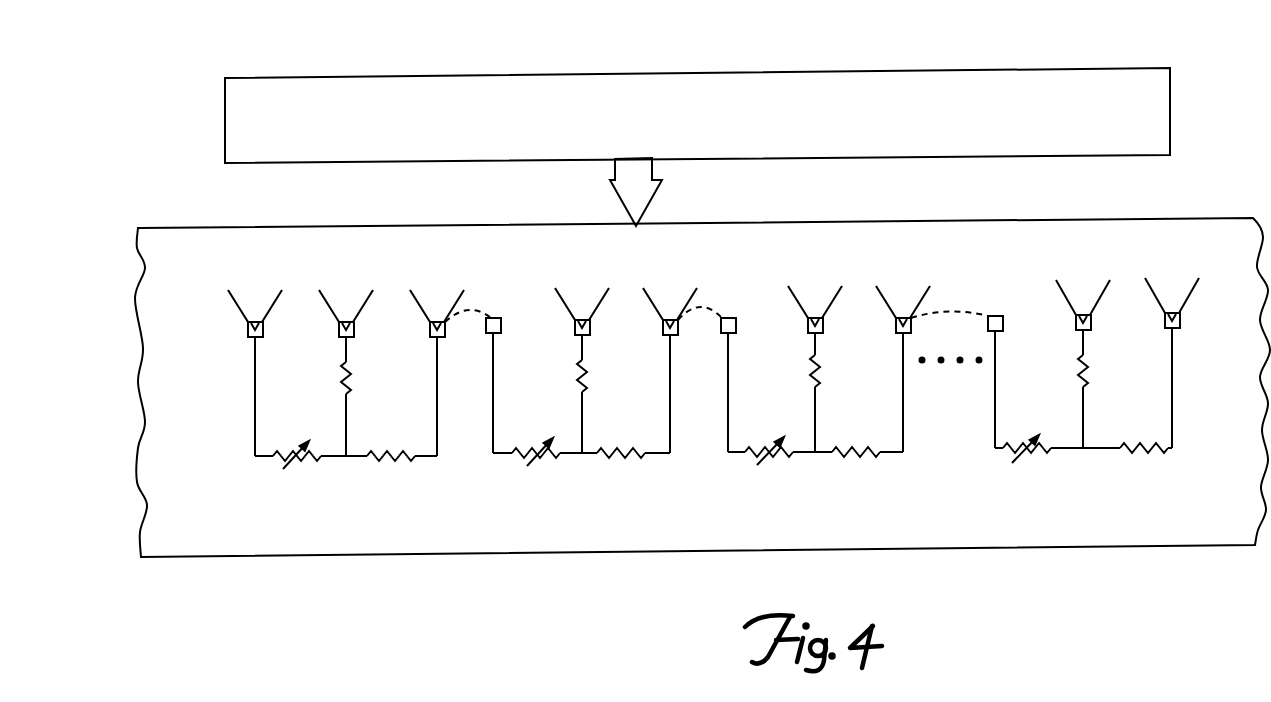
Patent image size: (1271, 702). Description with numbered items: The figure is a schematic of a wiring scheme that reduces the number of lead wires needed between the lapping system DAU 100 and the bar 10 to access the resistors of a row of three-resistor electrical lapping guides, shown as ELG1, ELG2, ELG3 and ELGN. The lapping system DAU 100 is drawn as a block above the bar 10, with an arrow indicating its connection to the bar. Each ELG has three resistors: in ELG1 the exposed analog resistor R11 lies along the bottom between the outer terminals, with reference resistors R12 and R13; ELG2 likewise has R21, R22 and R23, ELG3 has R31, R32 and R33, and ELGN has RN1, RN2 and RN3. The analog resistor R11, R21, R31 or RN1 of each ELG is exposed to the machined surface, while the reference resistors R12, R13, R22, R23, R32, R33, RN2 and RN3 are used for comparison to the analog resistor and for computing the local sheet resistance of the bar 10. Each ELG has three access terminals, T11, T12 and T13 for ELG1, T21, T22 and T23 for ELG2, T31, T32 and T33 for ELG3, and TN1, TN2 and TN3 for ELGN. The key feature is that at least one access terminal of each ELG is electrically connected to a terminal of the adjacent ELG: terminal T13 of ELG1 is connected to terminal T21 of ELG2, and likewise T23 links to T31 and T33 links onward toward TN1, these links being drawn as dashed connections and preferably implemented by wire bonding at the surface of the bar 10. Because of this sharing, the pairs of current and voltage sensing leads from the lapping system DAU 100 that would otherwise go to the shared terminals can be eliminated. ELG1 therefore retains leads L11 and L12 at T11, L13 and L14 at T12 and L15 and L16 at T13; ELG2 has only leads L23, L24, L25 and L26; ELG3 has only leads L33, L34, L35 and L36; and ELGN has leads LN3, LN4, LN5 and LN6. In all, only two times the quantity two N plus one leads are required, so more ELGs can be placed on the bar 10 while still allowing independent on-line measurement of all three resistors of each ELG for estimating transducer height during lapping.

The lapping system DAU 100 is at (223, 78).
The bar 10 is at (190, 557).
The first electrical lapping guide ELG1 is at (346, 395).
The second electrical lapping guide ELG2 is at (605, 392).
The third electrical lapping guide ELG3 is at (854, 389).
The Nth electrical lapping guide ELGN is at (1105, 387).
The first access terminal of ELG1 T11 is at (232, 389).
The second access terminal of ELG1 T12 is at (323, 389).
The third access terminal of ELG1 T13 is at (411, 389).
The first access terminal of ELG2 T21 is at (516, 385).
The second access terminal of ELG2 T22 is at (604, 386).
The third access terminal of ELG2 T23 is at (694, 386).
The first access terminal of ELG3 T31 is at (750, 385).
The second access terminal of ELG3 T32 is at (836, 385).
The third access terminal of ELG3 T33 is at (883, 385).
The first access terminal of ELGN TN1 is at (1017, 382).
The second access terminal of ELGN TN2 is at (1105, 381).
The third access terminal of ELGN TN3 is at (1194, 380).
The analog resistor of ELG1 R11 is at (297, 469).
The first reference resistor of ELG1 R12 is at (367, 386).
The second reference resistor of ELG1 R13 is at (391, 474).
The analog resistor of ELG2 R21 is at (536, 466).
The first reference resistor of ELG2 R22 is at (604, 385).
The second reference resistor of ELG2 R23 is at (622, 471).
The analog resistor of ELG3 R31 is at (769, 465).
The first reference resistor of ELG3 R32 is at (837, 381).
The second reference resistor of ELG3 R33 is at (856, 470).
The analog resistor of ELGN RN1 is at (1032, 465).
The first reference resistor of ELGN RN2 is at (1106, 379).
The second reference resistor of ELGN RN3 is at (1144, 468).
The current lead of ELG1 L11 is at (237, 290).
The voltage sensing lead of ELG1 L12 is at (281, 290).
The current lead of ELG1 L13 is at (322, 290).
The voltage sensing lead of ELG1 L14 is at (373, 290).
The current lead of ELG1 L15 is at (419, 290).
The voltage sensing lead of ELG1 L16 is at (463, 290).
The current lead of ELG2 L23 is at (564, 287).
The voltage sensing lead of ELG2 L24 is at (610, 287).
The current lead of ELG2 L25 is at (658, 287).
The voltage sensing lead of ELG2 L26 is at (700, 287).
The current lead of ELG3 L33 is at (795, 285).
The voltage sensing lead of ELG3 L34 is at (844, 285).
The current lead of ELG3 L35 is at (893, 285).
The voltage sensing lead of ELG3 L36 is at (933, 285).
The current lead of ELGN LN3 is at (1066, 282).
The voltage sensing lead of ELGN LN4 is at (1111, 282).
The current lead of ELGN LN5 is at (1162, 281).
The voltage sensing lead of ELGN LN6 is at (1201, 281).